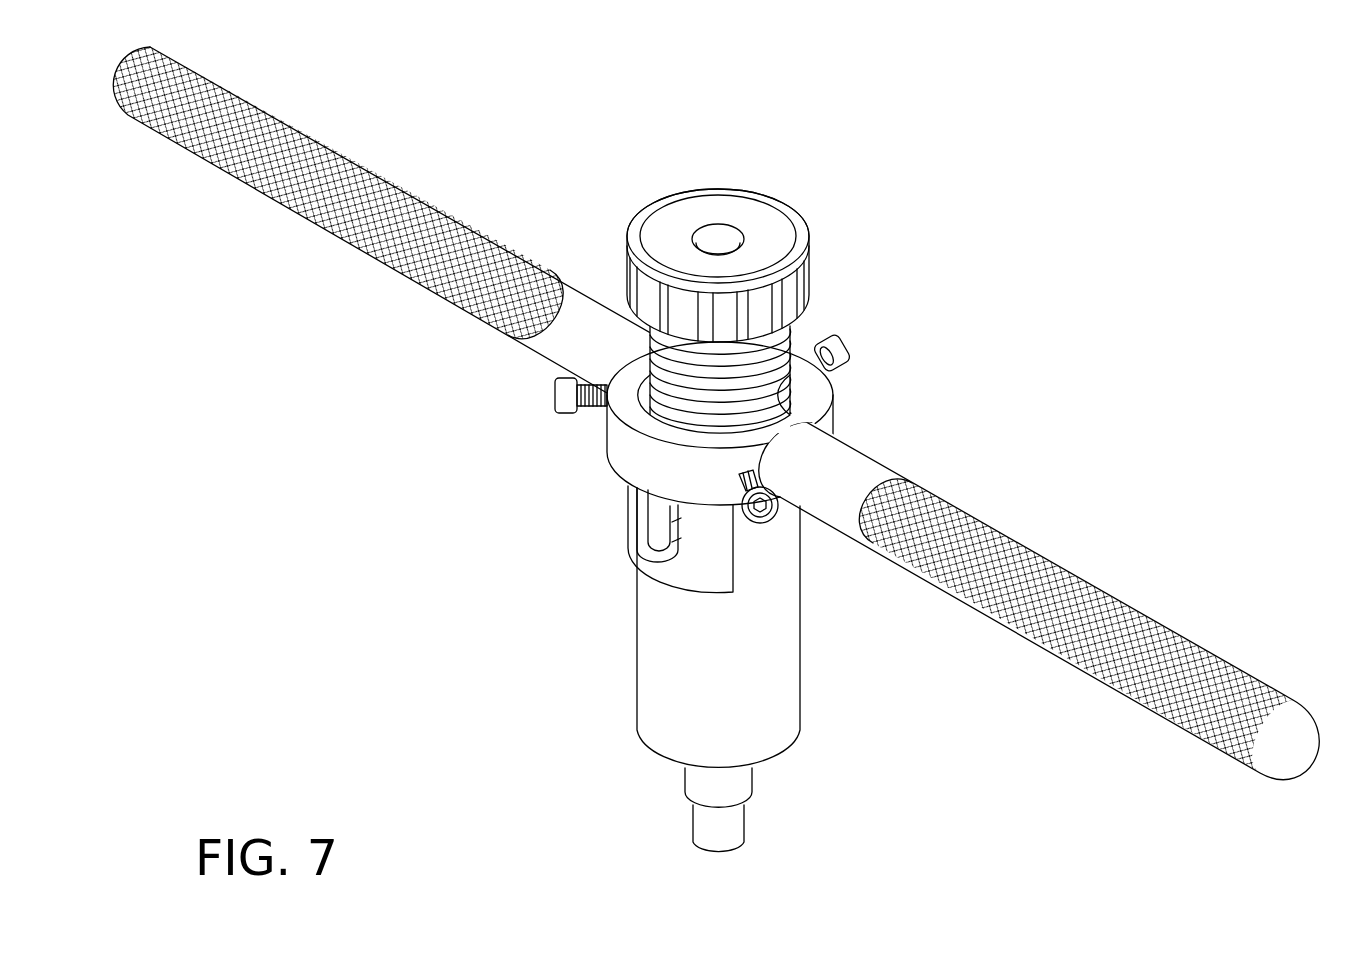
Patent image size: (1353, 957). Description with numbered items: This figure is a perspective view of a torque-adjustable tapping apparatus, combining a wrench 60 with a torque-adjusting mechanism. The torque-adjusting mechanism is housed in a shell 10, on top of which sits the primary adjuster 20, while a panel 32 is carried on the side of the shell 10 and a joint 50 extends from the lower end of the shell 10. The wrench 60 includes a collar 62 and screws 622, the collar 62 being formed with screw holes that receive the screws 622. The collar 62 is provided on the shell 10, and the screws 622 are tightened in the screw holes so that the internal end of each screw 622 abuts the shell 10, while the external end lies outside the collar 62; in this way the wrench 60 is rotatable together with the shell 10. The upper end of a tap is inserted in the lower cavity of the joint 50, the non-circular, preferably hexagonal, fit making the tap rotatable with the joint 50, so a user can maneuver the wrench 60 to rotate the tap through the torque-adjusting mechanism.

The shell 10 is at (808, 638).
The primary adjuster 20 is at (760, 184).
The panel 32 is at (624, 522).
The joint 50 is at (684, 815).
The wrench 60 is at (1073, 552).
The collar 62 is at (797, 387).
The screws 622 is at (842, 340).